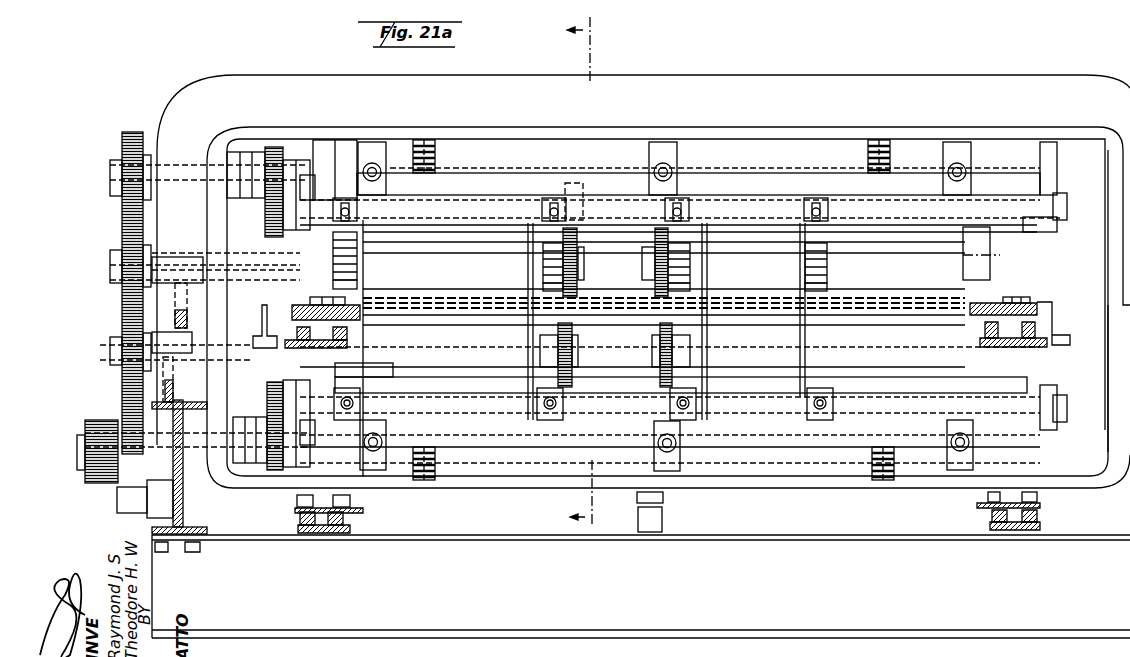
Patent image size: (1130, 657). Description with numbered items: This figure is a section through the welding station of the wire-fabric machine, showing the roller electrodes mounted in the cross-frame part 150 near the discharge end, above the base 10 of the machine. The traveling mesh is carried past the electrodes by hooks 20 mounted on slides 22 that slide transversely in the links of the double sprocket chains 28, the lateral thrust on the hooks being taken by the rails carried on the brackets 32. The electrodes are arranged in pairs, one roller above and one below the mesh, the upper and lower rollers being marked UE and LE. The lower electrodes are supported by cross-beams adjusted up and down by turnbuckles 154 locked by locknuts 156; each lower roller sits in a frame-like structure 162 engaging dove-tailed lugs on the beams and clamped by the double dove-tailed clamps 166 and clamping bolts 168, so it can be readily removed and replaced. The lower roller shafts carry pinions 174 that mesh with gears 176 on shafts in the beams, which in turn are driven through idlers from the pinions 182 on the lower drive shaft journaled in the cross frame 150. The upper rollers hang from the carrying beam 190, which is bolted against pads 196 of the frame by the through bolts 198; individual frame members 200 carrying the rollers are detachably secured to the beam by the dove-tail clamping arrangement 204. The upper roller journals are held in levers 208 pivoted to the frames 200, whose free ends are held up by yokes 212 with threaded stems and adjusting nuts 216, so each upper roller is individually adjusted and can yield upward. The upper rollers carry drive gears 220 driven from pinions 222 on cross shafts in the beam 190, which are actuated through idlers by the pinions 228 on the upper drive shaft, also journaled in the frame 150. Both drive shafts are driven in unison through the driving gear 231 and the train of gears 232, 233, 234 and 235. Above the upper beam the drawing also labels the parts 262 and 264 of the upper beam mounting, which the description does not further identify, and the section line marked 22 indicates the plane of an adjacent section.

The base 10 is at (560, 641).
The hooks 20 is at (357, 305).
The slides 22 is at (592, 271).
The sprocket chains 28 is at (290, 328).
The brackets 32 is at (300, 303).
The cross-frame part 150 is at (757, 78).
The turnbuckles 154 is at (437, 464).
The locknuts 156 is at (437, 453).
The frame-like structure 162 is at (502, 366).
The double dove-tailed clamps 166 is at (845, 383).
The clamping bolts 168 is at (360, 405).
The pinions 174 is at (655, 351).
The gears 176 is at (663, 381).
The pinions 182 is at (277, 470).
The carrying beam 190 is at (786, 169).
The pads 196 is at (385, 188).
The through bolts 198 is at (360, 170).
The frame members 200 is at (413, 250).
The dove-tail clamping arrangement 204 is at (834, 192).
The levers 208 is at (333, 283).
The yokes 212 is at (333, 262).
The adjusting nuts 216 is at (358, 212).
The drive gears 220 is at (655, 291).
The pinions 222 is at (655, 228).
The pinions 228 is at (273, 147).
The driving gear 231 is at (85, 486).
The gear 232 is at (120, 506).
The gear 233 is at (122, 380).
The gear 234 is at (122, 303).
The gear 235 is at (122, 210).
The spring washer 262 is at (437, 160).
The adjusting screw 264 is at (437, 147).